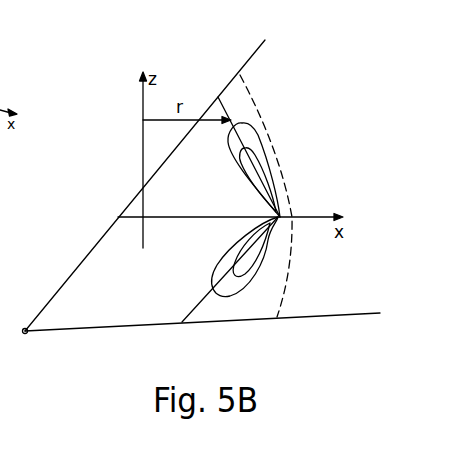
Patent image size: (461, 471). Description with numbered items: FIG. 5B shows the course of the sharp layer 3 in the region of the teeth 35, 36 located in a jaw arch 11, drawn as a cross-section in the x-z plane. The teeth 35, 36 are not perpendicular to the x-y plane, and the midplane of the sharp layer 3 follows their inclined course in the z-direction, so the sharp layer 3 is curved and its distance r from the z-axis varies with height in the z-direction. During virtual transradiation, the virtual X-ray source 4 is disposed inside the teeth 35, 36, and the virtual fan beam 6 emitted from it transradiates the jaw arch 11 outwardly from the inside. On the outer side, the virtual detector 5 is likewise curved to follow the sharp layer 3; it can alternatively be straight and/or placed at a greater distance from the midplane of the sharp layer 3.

The sharp layer 3 is at (230, 112).
The virtual X-ray source 4 is at (24, 335).
The virtual detector 5 is at (287, 290).
The virtual fan beam 6 is at (137, 297).
The jaw arch 11 is at (250, 140).
The tooth 35 is at (273, 183).
The tooth 36 is at (268, 250).